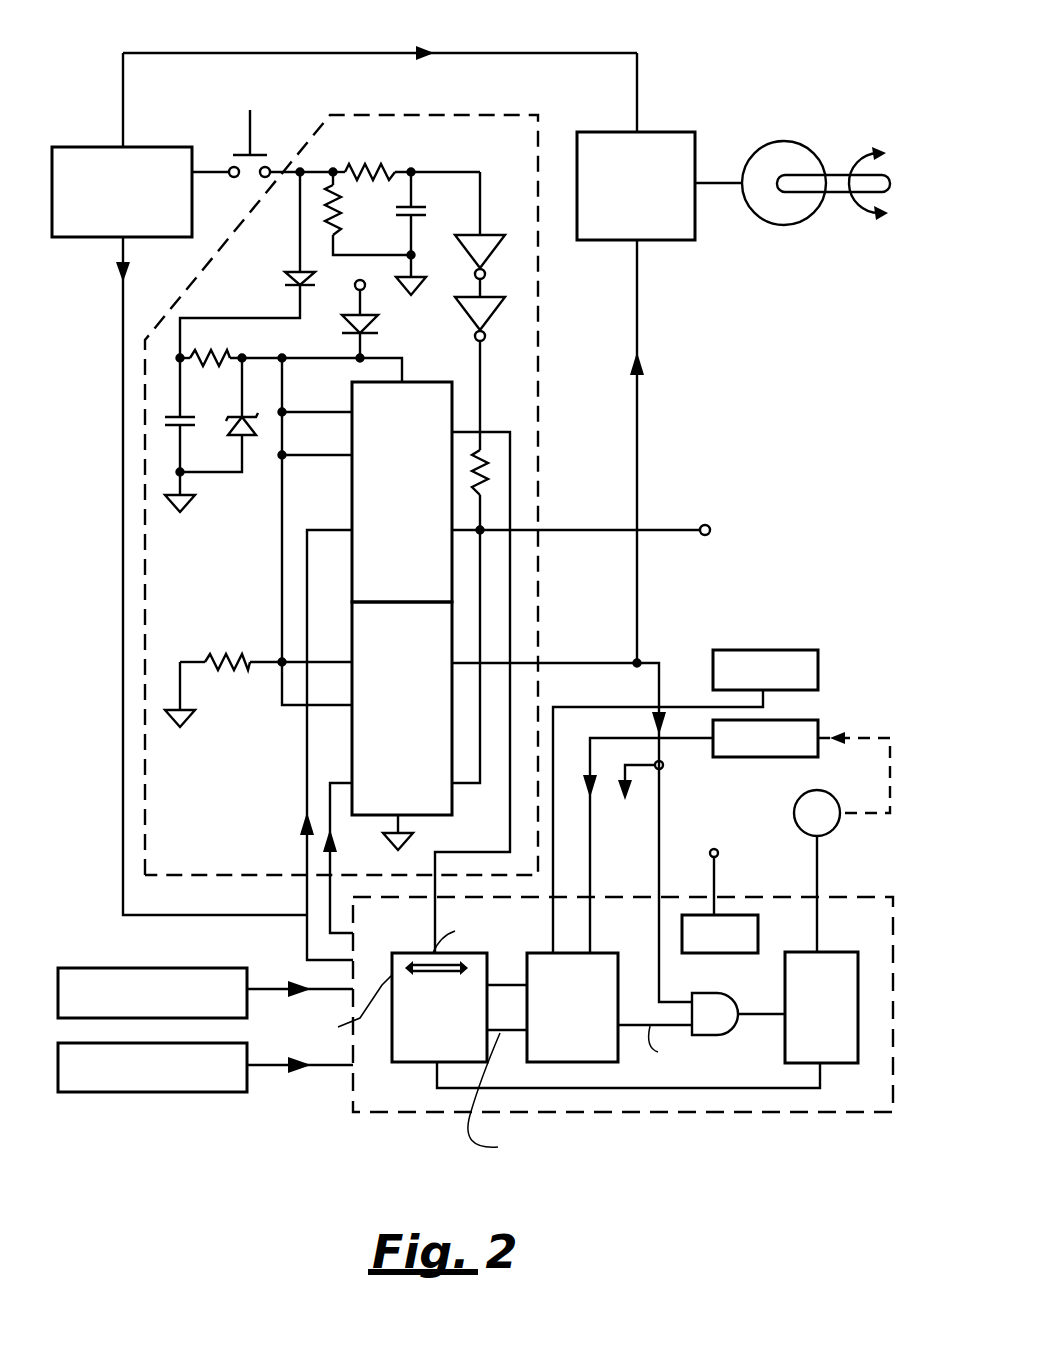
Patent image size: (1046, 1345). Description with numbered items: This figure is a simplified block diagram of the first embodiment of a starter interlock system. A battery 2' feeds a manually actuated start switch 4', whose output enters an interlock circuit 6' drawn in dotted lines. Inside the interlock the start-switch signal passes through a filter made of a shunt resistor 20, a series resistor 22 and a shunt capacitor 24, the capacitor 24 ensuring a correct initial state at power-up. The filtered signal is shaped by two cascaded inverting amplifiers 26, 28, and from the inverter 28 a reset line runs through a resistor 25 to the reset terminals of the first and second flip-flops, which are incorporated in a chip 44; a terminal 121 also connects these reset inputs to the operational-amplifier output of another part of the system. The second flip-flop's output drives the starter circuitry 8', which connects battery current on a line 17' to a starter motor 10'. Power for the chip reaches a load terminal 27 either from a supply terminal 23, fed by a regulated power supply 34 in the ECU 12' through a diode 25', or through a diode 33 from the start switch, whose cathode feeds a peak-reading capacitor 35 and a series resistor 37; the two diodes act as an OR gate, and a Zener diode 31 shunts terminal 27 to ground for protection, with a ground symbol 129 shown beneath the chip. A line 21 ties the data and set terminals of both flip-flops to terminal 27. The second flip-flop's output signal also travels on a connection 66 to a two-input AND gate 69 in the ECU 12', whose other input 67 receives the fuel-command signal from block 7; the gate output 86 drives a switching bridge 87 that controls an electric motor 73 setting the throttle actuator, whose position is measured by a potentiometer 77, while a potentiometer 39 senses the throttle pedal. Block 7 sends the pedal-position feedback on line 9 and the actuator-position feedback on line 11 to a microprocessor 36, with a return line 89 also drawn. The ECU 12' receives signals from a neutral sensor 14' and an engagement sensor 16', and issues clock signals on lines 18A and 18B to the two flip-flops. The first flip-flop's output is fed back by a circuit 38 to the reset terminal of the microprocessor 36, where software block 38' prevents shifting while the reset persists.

The battery 2' is at (122, 170).
The start switch 4' is at (262, 147).
The interlock circuit 6' is at (341, 474).
The starter circuitry 8' is at (636, 158).
The starter motor 10' is at (792, 170).
The line 17' is at (380, 37).
The shunt resistor 20 is at (340, 222).
The series resistor 22 is at (366, 160).
The shunt capacitor 24 is at (428, 212).
The inverting amplifier 26 is at (488, 235).
The inverting amplifier 28 is at (503, 302).
The diode 33 is at (285, 280).
The power supply terminal 23 is at (366, 298).
The diode 25' is at (342, 353).
The series resistor 37 is at (205, 356).
The capacitor 35 is at (190, 420).
The Zener diode 31 is at (232, 440).
The load terminal 27 is at (406, 382).
The line 21 is at (277, 531).
The resistor 25 is at (517, 616).
The terminal 121 is at (637, 527).
The chip 44 is at (352, 602).
The feedback circuit 38 is at (508, 692).
The output line 18A is at (305, 753).
The output line 18B is at (333, 864).
The ground 129 is at (402, 831).
The output connection 66 is at (657, 693).
The potentiometer 39 is at (820, 662).
The potentiometer 77 is at (812, 720).
The electric motor 73 is at (836, 830).
The regulated power supply 34 is at (758, 926).
The ECU 12' is at (623, 1023).
The neutral sensor 14' is at (205, 974).
The engagement sensor 16' is at (205, 1086).
The microprocessor 36 is at (416, 953).
The block 38' is at (342, 1009).
The output connection 9 is at (492, 985).
The feedback line 11 is at (493, 1032).
The block 7 is at (608, 1062).
The input 67 is at (640, 1024).
The AND gate 69 is at (712, 993).
The output line 86 is at (766, 1015).
The switching bridge 87 is at (838, 1063).
The feedback line 89 is at (437, 1080).